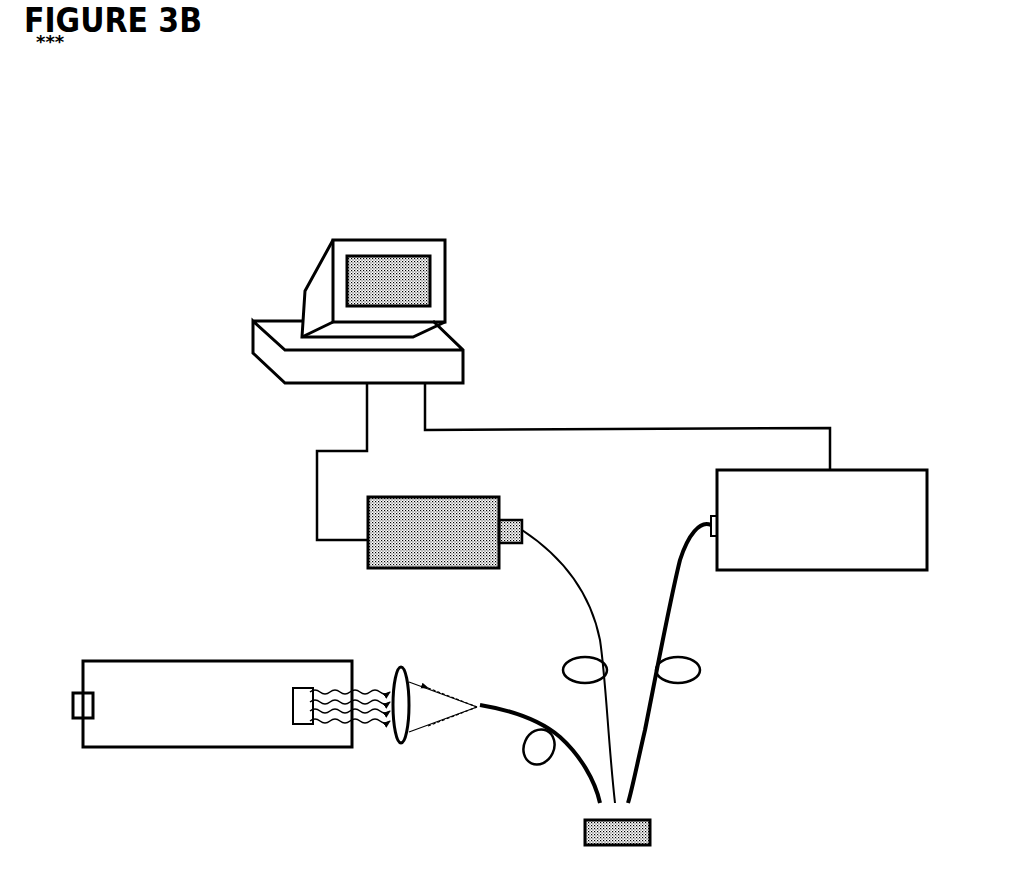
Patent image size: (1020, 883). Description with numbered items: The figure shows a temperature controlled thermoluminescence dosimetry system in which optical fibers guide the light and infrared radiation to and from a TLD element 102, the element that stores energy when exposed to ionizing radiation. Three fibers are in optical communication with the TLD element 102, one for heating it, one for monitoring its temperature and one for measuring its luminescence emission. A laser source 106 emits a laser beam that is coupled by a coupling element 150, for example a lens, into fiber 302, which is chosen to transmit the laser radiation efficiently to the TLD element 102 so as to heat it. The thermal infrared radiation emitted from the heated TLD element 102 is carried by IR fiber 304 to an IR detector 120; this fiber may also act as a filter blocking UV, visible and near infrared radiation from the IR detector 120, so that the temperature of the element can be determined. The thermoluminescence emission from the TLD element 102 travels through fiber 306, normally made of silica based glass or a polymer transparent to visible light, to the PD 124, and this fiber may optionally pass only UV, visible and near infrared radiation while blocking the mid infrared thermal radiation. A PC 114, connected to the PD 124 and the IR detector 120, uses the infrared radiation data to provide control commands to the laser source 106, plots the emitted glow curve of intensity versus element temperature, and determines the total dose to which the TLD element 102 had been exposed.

The controller 114 is at (380, 311).
The PD 124 is at (445, 549).
The IR detector 120 is at (819, 520).
The laser source 106 is at (231, 704).
The coupling element 150 is at (395, 765).
The fiber 302 is at (588, 758).
The IR fiber 304 is at (650, 735).
The fiber 306 is at (610, 646).
The TLD element 102 is at (619, 851).